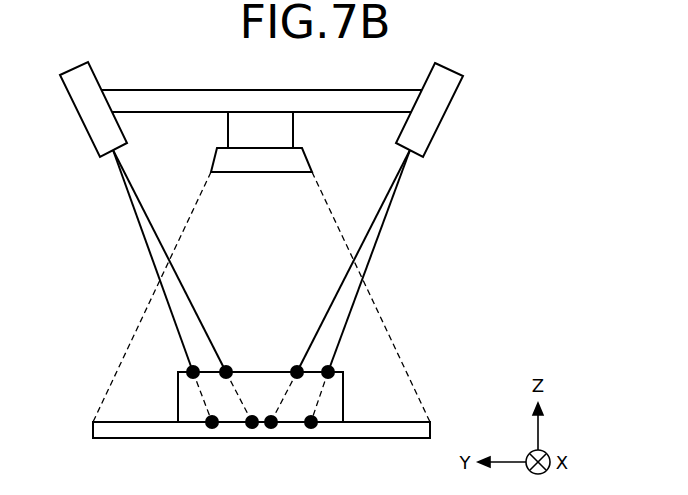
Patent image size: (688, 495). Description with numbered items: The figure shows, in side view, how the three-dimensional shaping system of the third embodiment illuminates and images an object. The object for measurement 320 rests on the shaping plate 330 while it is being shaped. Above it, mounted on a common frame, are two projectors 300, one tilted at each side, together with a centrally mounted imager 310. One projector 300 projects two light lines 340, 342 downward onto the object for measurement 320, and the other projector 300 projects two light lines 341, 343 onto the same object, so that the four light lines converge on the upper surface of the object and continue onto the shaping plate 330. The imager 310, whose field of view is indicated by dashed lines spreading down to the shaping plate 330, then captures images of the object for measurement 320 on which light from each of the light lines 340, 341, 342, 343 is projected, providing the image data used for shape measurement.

The projector 300 is at (445, 117).
The shape sensor 310 is at (296, 128).
The object for measurement 320 is at (195, 412).
The shaping plate 330 is at (125, 440).
The light line 340 is at (378, 239).
The light line 341 is at (145, 242).
The light line 342 is at (330, 300).
The light line 343 is at (175, 270).